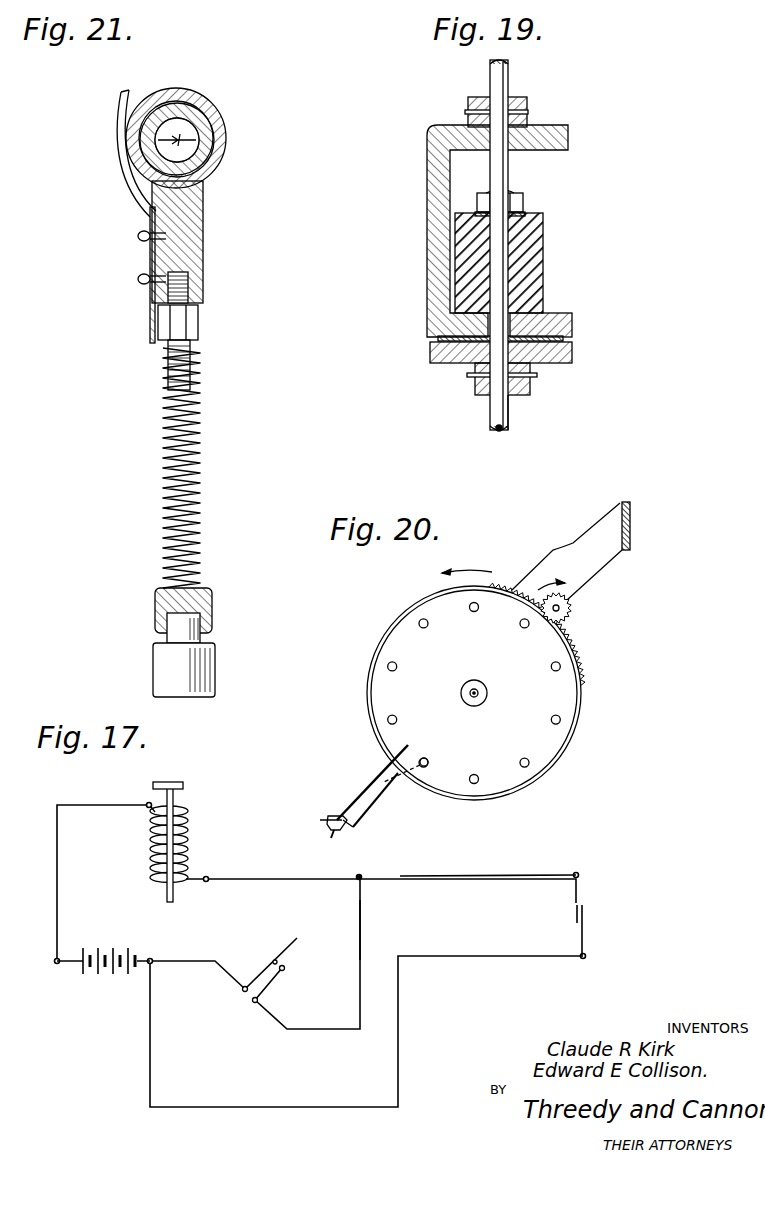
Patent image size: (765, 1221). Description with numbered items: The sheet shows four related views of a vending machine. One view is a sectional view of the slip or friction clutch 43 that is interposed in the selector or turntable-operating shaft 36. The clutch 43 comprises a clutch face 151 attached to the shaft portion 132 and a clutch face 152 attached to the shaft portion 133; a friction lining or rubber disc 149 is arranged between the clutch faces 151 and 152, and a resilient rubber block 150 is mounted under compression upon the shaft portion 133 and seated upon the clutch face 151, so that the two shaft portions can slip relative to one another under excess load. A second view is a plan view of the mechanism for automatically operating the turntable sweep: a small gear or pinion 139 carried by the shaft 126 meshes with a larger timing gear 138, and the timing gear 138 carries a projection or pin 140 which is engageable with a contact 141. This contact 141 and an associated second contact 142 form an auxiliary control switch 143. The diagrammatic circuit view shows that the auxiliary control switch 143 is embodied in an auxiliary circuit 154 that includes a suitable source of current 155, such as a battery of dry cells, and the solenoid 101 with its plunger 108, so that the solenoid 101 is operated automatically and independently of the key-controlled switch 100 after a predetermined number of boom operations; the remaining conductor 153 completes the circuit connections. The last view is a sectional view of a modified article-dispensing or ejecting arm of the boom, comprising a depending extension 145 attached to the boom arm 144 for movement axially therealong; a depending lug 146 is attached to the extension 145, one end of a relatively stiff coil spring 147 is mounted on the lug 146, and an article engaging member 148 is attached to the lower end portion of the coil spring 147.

In FIG. 21, the boom arm 144 is at (232, 138).
In FIG. 21, the depending extension 145 is at (203, 255).
In FIG. 21, the depending lug 146 is at (190, 356).
In FIG. 21, the coil spring 147 is at (200, 446).
In FIG. 21, the article engaging member 148 is at (200, 666).
In FIG. 19, the slip or friction clutch 43 is at (427, 268).
In FIG. 19, the shaft portion 132 is at (508, 82).
In FIG. 19, the shaft portion 133 is at (512, 414).
In FIG. 19, the rubber block 150 is at (543, 250).
In FIG. 19, the clutch face 151 is at (560, 313).
In FIG. 19, the friction lining or rubber disc 149 is at (563, 338).
In FIG. 19, the clutch face 152 is at (560, 355).
In FIG. 19, the turntable-operating shaft 36 is at (494, 425).
In FIG. 20, the timing gear 138 is at (550, 752).
In FIG. 20, the shaft 126 is at (560, 608).
In FIG. 20, the pinion 139 is at (562, 620).
In FIG. 20, the pin 140 is at (427, 766).
In FIG. 20, the contact 141 is at (363, 798).
In FIG. 17, the contact 141 is at (260, 978).
In FIG. 20, the second contact 142 is at (377, 793).
In FIG. 17, the second contact 142 is at (278, 975).
In FIG. 20, the auxiliary control switch 143 is at (355, 821).
In FIG. 17, the auxiliary control switch 143 is at (268, 988).
In FIG. 17, the solenoid 101 is at (168, 838).
In FIG. 17, the solenoid plunger 108 is at (166, 893).
In FIG. 17, the source of current 155 is at (110, 977).
In FIG. 17, the auxiliary circuit 154 is at (360, 934).
In FIG. 17, the conductor 153 is at (498, 876).
In FIG. 17, the key-controlled switch 100 is at (575, 905).